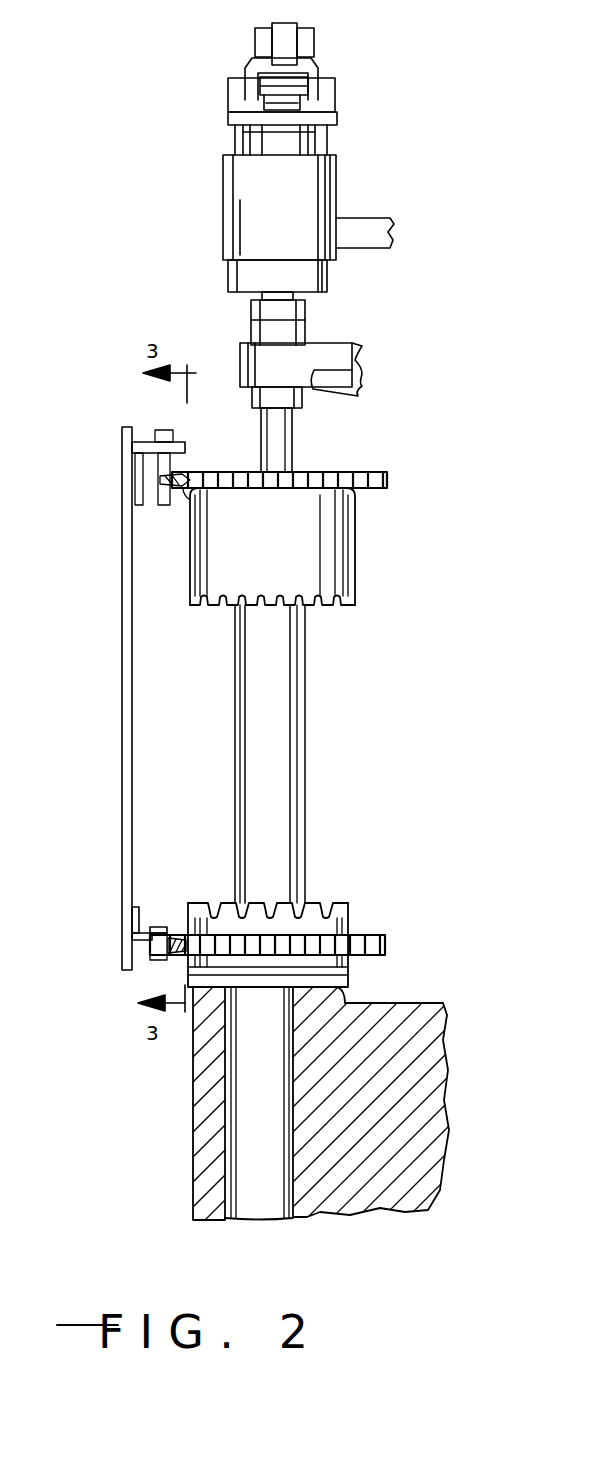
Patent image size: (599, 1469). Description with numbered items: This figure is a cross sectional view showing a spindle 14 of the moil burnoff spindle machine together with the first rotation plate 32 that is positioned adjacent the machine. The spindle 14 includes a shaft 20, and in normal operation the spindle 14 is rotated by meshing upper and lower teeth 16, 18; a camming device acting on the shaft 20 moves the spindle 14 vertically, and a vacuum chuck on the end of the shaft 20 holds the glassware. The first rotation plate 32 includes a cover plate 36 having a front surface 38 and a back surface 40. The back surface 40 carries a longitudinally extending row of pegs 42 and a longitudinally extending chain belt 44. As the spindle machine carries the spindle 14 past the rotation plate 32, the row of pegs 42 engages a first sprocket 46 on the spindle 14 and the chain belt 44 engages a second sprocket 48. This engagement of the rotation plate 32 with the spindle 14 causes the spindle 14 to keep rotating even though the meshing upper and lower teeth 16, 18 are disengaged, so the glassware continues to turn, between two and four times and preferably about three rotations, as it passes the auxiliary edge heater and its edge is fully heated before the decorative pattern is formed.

The spindle 14 is at (293, 432).
The upper teeth 16 is at (335, 607).
The lower teeth 18 is at (330, 903).
The shaft 20 is at (240, 1117).
The first rotation plate 32 is at (122, 487).
The cover plate 36 is at (122, 690).
The front surface 38 is at (120, 905).
The back surface 40 is at (132, 800).
The row of pegs 42 is at (163, 506).
The chain belt 44 is at (157, 925).
The first sprocket 46 is at (387, 480).
The second sprocket 48 is at (387, 944).